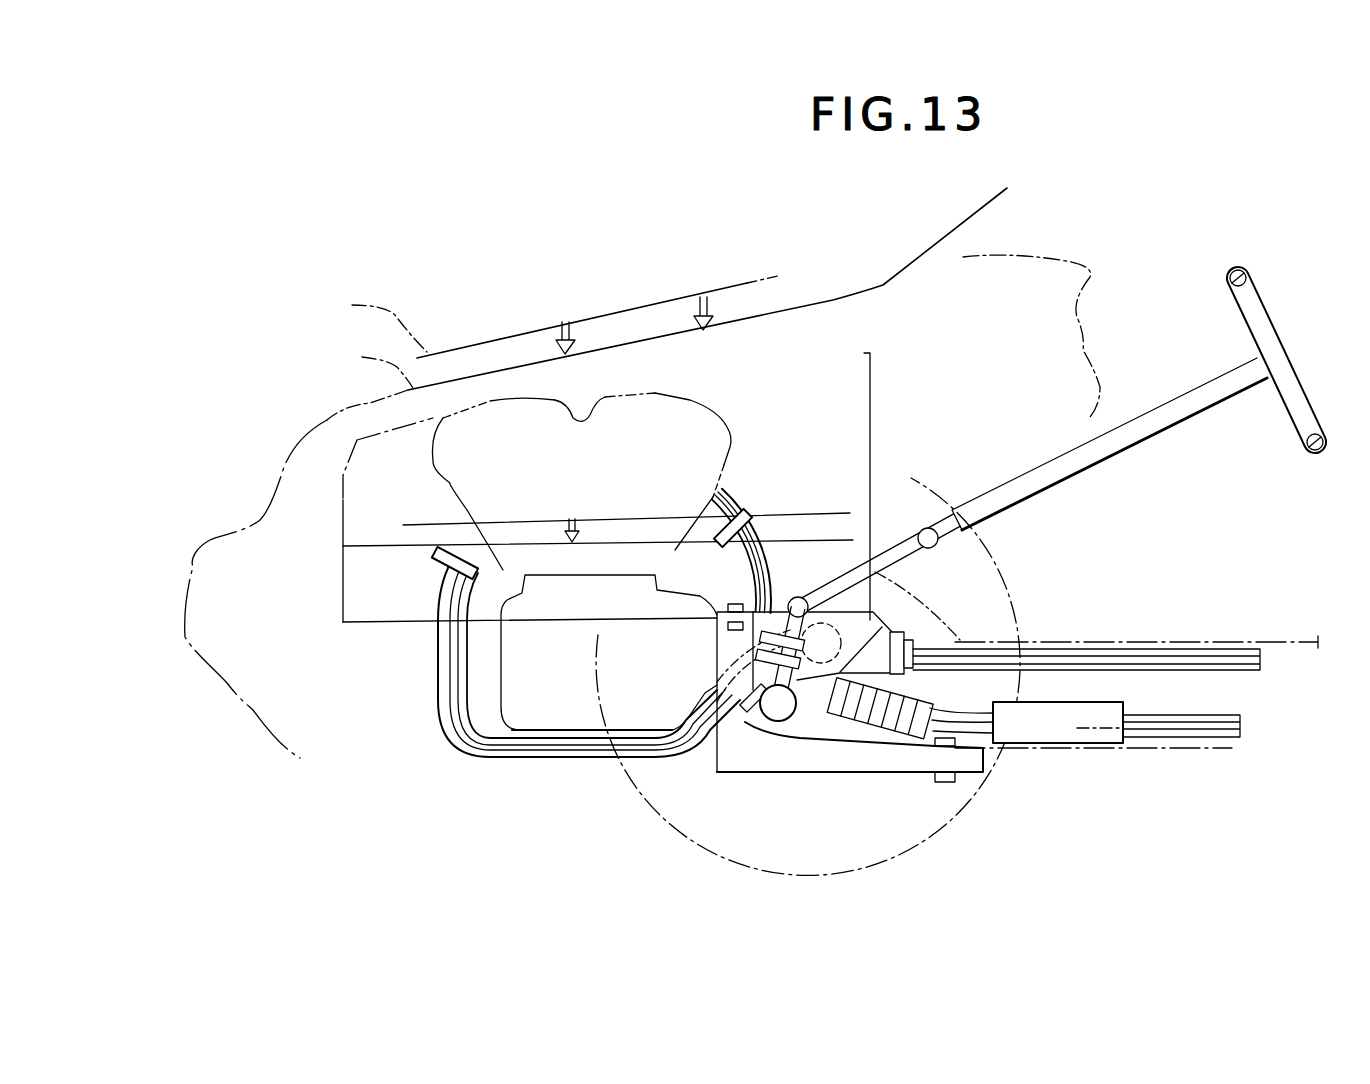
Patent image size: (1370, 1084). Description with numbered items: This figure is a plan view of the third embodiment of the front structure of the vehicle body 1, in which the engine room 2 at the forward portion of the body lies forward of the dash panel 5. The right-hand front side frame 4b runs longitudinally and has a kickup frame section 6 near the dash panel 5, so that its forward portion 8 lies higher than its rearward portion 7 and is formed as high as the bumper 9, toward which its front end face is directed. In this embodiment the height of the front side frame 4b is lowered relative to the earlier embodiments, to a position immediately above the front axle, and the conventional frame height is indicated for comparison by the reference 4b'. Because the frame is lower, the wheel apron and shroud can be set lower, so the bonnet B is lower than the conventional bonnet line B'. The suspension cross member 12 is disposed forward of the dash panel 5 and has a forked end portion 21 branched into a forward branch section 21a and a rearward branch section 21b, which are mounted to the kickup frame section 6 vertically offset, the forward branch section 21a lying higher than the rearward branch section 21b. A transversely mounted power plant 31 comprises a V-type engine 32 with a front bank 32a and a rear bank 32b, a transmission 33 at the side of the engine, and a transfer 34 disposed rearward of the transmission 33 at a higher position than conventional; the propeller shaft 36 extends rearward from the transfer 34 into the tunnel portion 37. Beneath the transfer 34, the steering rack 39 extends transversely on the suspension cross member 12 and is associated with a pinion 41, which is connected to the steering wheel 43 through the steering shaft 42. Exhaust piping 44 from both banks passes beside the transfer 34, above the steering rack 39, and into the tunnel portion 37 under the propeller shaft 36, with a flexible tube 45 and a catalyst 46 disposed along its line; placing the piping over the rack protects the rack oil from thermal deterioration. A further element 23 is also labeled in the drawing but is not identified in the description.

The vehicle body 1 is at (832, 305).
The engine room 2 is at (758, 350).
The dash panel 5 is at (870, 463).
The kickup frame section 6 is at (952, 630).
The rearward portion 7 is at (1137, 752).
The forward portion 8 is at (695, 572).
The bumper 9 is at (185, 637).
The suspension cross member 12 is at (792, 769).
The right-hand front side frame 4b is at (593, 625).
The conventional right-hand front side frame height 4b' is at (596, 520).
The forked end portion 21 is at (792, 769).
The forward branch section 21a is at (717, 640).
The rearward branch section 21b is at (918, 765).
The rotation locus 23 is at (640, 805).
The power plant 31 is at (617, 405).
The V-type engine 32 is at (568, 374).
The front bank 32a is at (505, 400).
The rear bank 32b is at (657, 393).
The transmission 33 is at (533, 722).
The transfer 34 is at (898, 637).
The propeller shaft 36 is at (1243, 672).
The tunnel portion 37 is at (1160, 648).
The steering rack 39 is at (780, 722).
The pinion 41 is at (700, 745).
The steering shaft 42 is at (905, 540).
The steering wheel 43 is at (1268, 340).
The exhaust piping 44 is at (752, 550).
The flexible tube 45 is at (862, 725).
The catalyst 46 is at (1018, 745).
The bonnet B is at (373, 360).
The conventional bonnet line B' is at (373, 318).